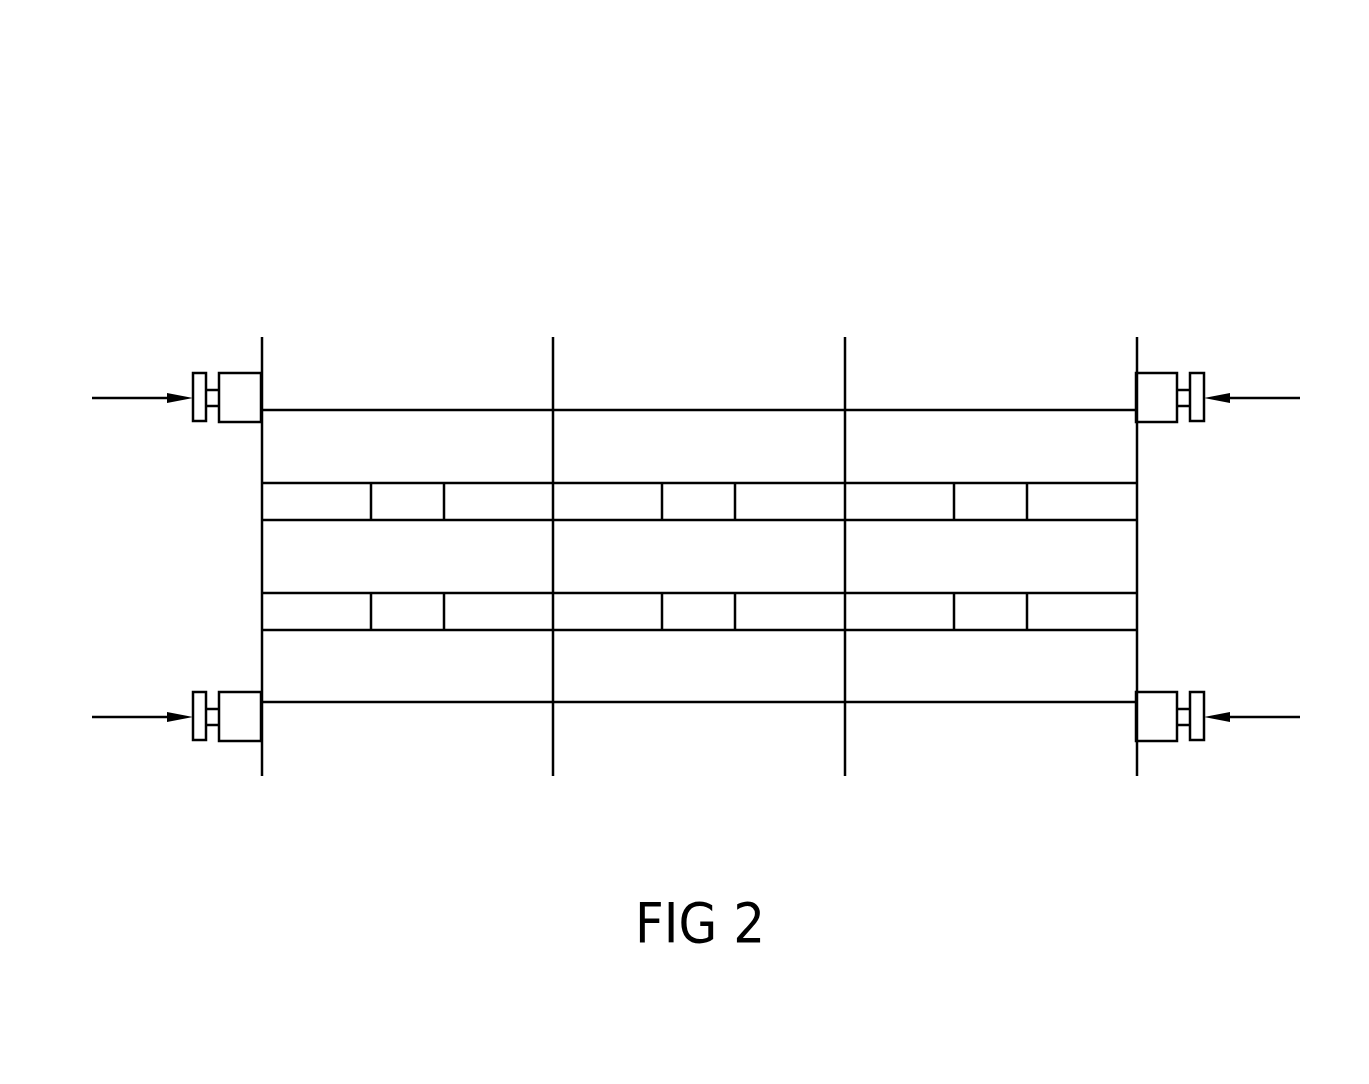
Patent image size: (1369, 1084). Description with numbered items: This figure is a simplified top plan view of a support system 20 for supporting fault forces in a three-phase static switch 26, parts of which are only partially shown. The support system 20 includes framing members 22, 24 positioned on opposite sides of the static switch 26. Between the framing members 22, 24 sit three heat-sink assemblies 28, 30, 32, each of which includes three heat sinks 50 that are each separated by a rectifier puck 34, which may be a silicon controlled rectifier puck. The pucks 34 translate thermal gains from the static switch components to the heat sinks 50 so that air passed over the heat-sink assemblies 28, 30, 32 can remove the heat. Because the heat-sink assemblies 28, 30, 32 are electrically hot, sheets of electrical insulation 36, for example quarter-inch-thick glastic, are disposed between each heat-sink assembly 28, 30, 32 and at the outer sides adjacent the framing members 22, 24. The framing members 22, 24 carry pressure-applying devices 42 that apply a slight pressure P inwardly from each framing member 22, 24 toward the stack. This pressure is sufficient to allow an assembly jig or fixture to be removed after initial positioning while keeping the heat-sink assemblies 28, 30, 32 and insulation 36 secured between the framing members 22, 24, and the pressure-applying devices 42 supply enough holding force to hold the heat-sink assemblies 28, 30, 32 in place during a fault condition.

The support system 20 is at (1130, 245).
The framing member 22 is at (240, 415).
The framing member 24 is at (1155, 383).
The static switch 26 is at (809, 155).
The heat-sink assembly 28 is at (433, 362).
The heat-sink assembly 30 is at (720, 361).
The heat-sink assembly 32 is at (1024, 368).
The rectifier puck 34 is at (424, 502).
The sheet of electrical insulation 36 is at (263, 752).
The pressure-applying device 42 is at (198, 380).
The heat sink 50 is at (296, 428).